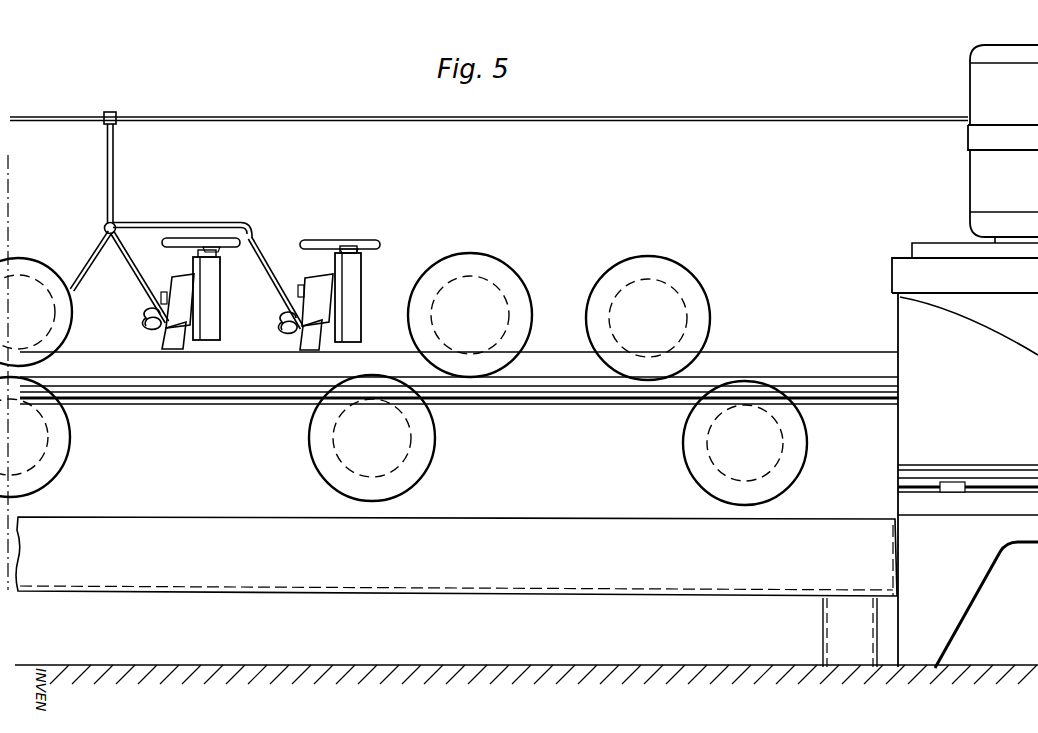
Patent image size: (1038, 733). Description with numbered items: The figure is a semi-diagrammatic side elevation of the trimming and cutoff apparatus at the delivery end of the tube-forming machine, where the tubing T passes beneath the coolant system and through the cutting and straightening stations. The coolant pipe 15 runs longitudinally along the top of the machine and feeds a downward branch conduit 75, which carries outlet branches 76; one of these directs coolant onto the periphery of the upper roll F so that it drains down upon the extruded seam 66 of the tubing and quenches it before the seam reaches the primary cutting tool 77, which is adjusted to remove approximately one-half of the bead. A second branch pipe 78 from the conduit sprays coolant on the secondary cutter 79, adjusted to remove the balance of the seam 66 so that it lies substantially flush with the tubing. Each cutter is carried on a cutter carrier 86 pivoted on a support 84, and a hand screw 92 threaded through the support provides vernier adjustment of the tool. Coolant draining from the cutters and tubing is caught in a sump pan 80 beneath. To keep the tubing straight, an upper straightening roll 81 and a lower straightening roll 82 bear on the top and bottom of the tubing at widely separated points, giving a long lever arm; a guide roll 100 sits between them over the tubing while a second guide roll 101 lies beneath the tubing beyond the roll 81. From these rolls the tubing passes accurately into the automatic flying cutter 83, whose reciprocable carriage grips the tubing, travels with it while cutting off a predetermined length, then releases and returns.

The coolant pipe 15 is at (64, 123).
The branch conduit 75 is at (114, 187).
The outlet branch 76 is at (82, 283).
The second branch pipe 78 is at (268, 254).
The upper roll F is at (21, 262).
The hand screw 92 is at (177, 242).
The support 84 is at (213, 297).
The cutter carrier 86 is at (218, 332).
The primary cutting tool 77 is at (177, 331).
The secondary cutter 79 is at (310, 337).
The seam 66 is at (78, 347).
The track T is at (148, 383).
The guide roll 100 is at (490, 268).
The upper straightening roll 81 is at (602, 285).
The lower straightening roll 82 is at (428, 460).
The guide roll 101 is at (692, 466).
The sump pan 80 is at (200, 540).
The automatic flying cutter 83 is at (960, 270).